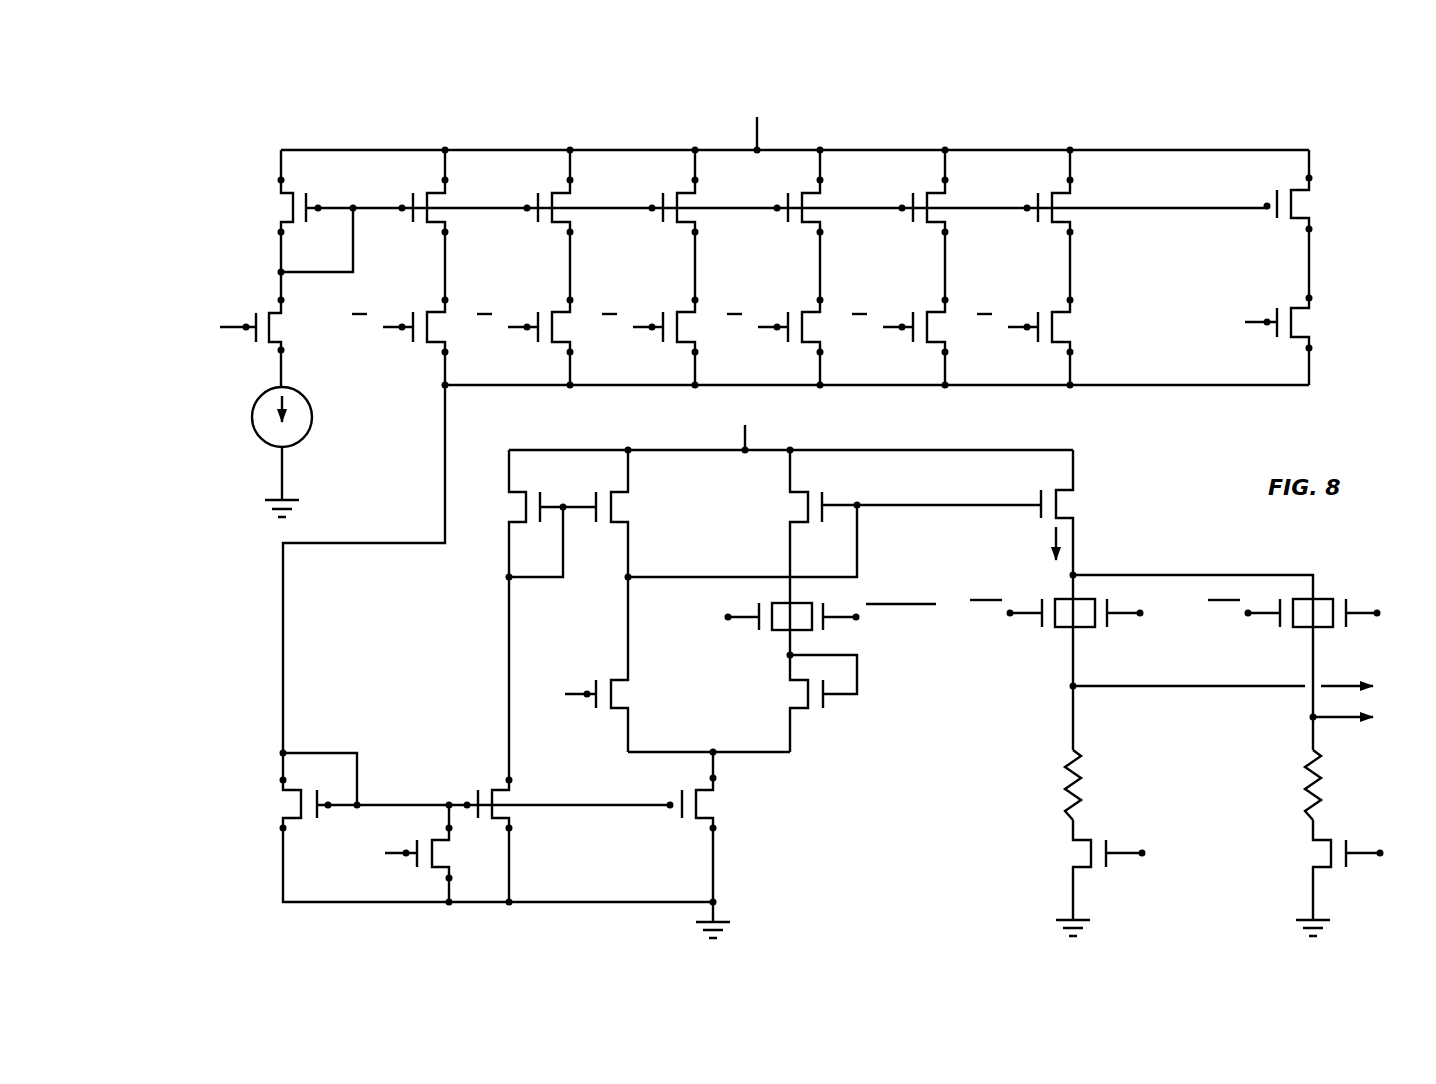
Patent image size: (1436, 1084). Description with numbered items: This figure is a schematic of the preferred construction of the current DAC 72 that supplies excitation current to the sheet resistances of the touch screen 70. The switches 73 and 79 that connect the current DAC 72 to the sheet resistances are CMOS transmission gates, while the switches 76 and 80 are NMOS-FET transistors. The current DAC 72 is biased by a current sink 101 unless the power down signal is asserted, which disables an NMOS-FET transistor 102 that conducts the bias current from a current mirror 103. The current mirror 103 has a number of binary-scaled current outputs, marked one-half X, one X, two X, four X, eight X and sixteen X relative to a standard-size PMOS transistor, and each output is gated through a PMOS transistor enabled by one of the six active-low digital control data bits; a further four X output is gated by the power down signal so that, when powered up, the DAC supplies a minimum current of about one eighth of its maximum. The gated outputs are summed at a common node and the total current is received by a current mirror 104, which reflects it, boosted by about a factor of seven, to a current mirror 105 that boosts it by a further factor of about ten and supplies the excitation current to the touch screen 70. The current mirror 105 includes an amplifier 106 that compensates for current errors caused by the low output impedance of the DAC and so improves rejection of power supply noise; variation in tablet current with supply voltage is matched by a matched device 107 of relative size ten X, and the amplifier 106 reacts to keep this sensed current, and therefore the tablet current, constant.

The touch screen 70 is at (1028, 764).
The current DAC 72 is at (1330, 276).
The switch 73 is at (1100, 637).
The switch 76 is at (1100, 816).
The switch 79 is at (1342, 637).
The switch 80 is at (1340, 816).
The current sink 101 is at (263, 437).
The NMOS-FET transistor 102 is at (277, 343).
The current mirror 103 is at (252, 179).
The current mirror 104 is at (260, 768).
The current mirror 105 is at (488, 557).
The amplifier 106 is at (616, 739).
The matched device 107 is at (863, 480).